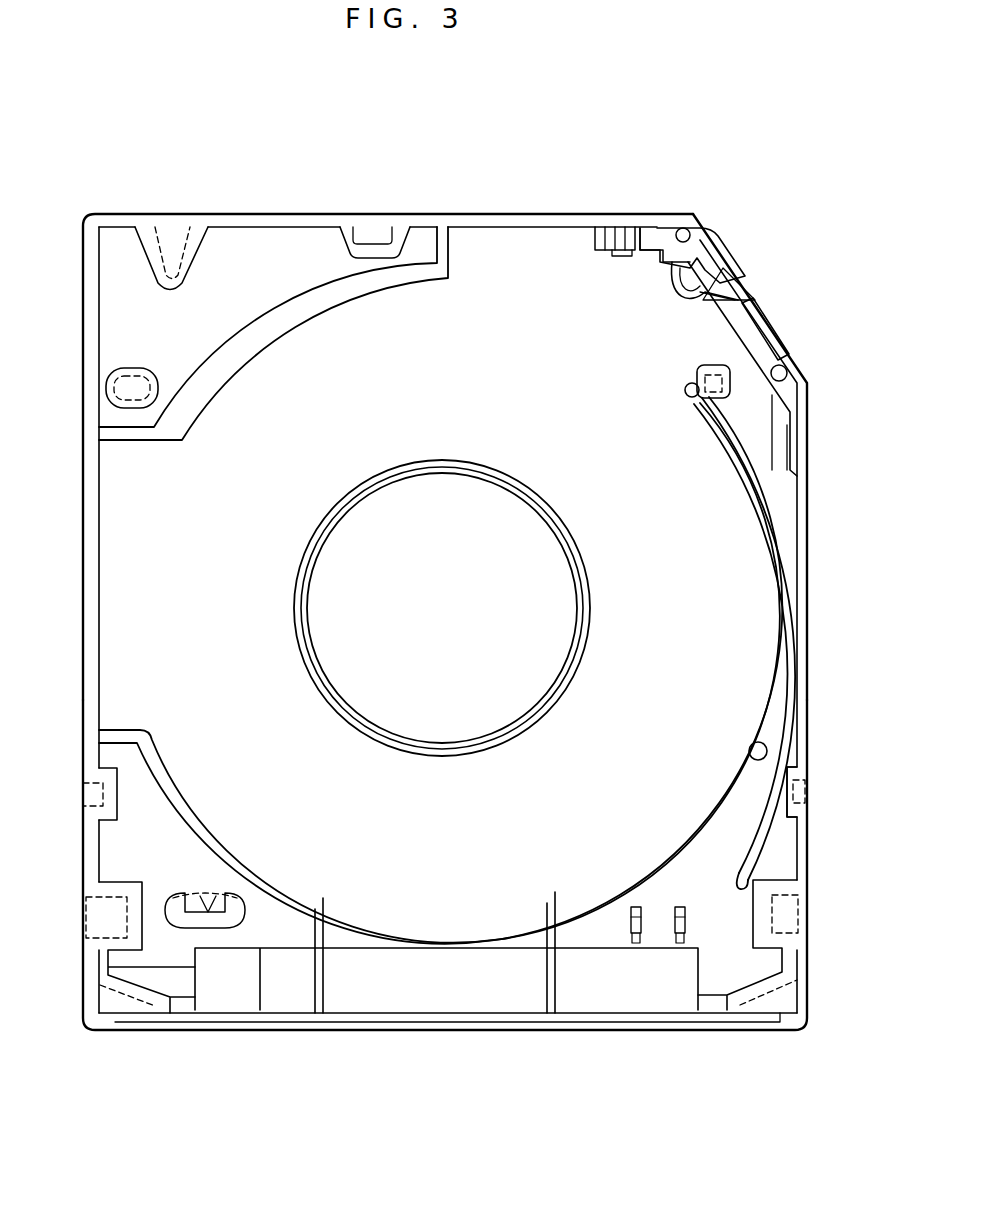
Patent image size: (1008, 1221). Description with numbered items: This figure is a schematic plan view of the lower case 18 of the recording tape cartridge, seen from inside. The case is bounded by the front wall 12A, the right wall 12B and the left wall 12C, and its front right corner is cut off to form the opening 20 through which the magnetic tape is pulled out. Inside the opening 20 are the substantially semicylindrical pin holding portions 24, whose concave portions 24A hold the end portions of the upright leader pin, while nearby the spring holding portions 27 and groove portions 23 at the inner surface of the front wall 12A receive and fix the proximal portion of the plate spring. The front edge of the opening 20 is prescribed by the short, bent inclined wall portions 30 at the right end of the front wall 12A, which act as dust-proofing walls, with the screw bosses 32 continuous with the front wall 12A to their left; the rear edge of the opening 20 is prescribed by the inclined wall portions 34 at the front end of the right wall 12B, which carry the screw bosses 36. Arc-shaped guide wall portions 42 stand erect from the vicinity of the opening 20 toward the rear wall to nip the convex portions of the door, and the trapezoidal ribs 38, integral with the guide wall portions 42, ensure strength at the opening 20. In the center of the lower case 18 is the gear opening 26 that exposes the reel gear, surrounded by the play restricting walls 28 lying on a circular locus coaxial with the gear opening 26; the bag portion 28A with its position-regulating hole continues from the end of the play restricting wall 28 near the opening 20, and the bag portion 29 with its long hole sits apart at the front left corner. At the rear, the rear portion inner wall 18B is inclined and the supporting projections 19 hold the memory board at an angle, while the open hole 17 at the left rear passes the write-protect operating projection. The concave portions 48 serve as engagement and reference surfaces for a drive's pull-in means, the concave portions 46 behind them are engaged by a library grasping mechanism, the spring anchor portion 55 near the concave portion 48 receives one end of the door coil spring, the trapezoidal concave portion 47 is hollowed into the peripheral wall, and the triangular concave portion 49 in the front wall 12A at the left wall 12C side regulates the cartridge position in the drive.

The front wall 12A is at (280, 213).
The right wall 12B is at (810, 610).
The left wall 12C is at (85, 540).
The open hole 17 is at (202, 896).
The lower case 18 is at (481, 120).
The rear portion inner wall 18B is at (630, 987).
The supporting projections 19 is at (680, 907).
The opening 20 is at (760, 280).
The groove portions 23 is at (650, 248).
The pin holding portions 24 is at (672, 282).
The concave portions 24A is at (698, 296).
The gear opening 26 is at (428, 470).
The spring holding portions 27 is at (628, 258).
The play restricting walls 28 is at (185, 396).
The bag portion 28A is at (688, 398).
The bag portion 29 is at (130, 362).
The inclined wall portions 30 is at (708, 247).
The screw bosses 32 is at (683, 228).
The inclined wall portions 34 is at (784, 433).
The screw bosses 36 is at (790, 374).
The ribs 38 is at (775, 330).
The guide wall portions 42 is at (744, 832).
The concave portions 46 is at (93, 922).
The concave portion 47 is at (373, 246).
The concave portion 48 is at (88, 790).
The concave portion for position regulation 49 is at (160, 250).
The spring anchor portion 55 is at (750, 747).